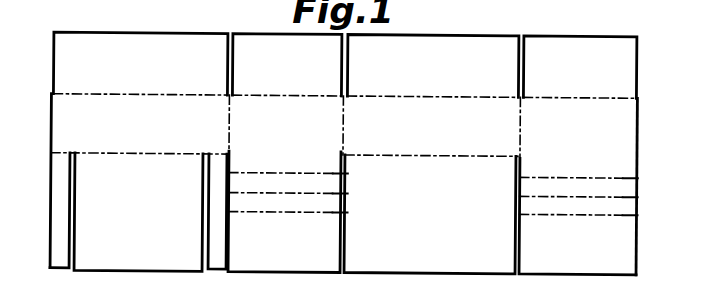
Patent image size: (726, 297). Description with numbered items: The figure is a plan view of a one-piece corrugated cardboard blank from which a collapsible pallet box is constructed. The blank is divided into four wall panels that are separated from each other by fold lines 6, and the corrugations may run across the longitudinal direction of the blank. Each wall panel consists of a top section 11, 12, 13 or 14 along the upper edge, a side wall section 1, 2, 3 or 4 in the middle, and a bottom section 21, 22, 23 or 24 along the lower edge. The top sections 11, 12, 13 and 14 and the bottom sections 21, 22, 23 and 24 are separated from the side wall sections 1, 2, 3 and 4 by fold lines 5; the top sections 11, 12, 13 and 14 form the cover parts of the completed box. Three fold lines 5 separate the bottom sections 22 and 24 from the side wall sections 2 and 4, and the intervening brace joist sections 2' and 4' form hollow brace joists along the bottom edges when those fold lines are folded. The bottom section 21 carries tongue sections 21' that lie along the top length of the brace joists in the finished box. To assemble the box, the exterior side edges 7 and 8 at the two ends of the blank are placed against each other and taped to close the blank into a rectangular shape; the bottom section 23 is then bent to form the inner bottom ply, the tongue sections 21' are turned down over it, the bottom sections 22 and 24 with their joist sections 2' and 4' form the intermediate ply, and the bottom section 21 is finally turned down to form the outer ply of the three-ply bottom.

The side wall section 1 is at (128, 132).
The side wall section 2 is at (285, 123).
The side wall section 3 is at (421, 137).
The side wall section 4 is at (575, 126).
The fold lines 5 is at (296, 212).
The fold lines 6 is at (229, 130).
The exterior side edge 7 is at (51, 120).
The exterior side edge 8 is at (638, 131).
The top section 11 is at (131, 75).
The top section 12 is at (276, 74).
The top section 13 is at (417, 75).
The top section 14 is at (566, 76).
The bottom section 21 is at (138, 212).
The bottom section 22 is at (276, 247).
The bottom section 23 is at (419, 223).
The bottom section 24 is at (562, 253).
The brace joist section 2' is at (354, 184).
The brace joist section 4' is at (646, 182).
The tongue section 21' is at (143, 225).